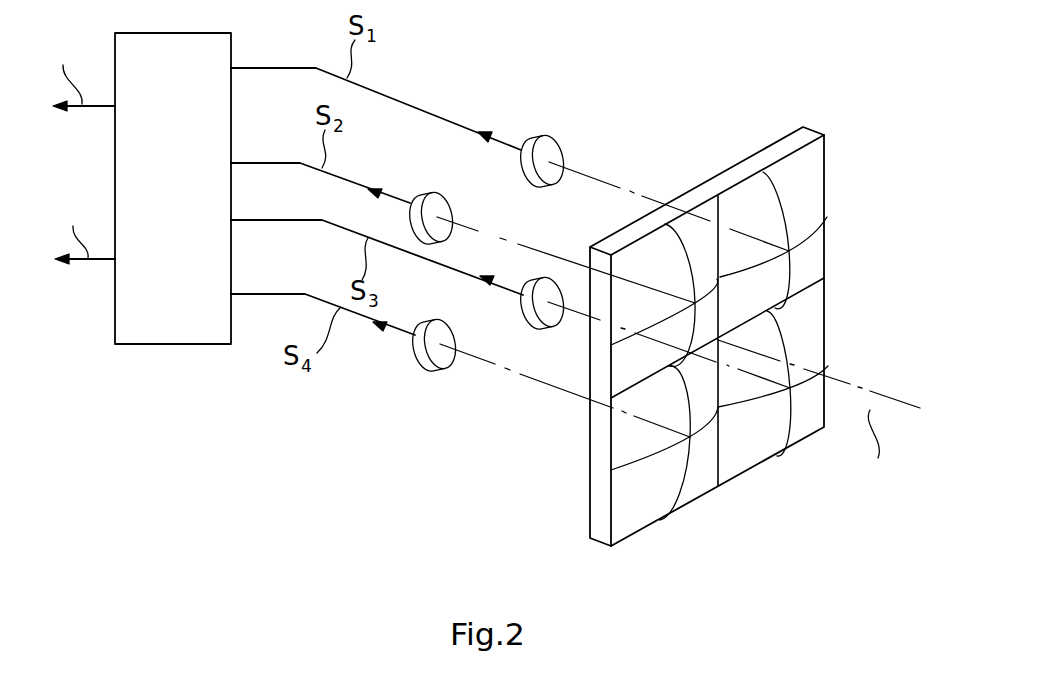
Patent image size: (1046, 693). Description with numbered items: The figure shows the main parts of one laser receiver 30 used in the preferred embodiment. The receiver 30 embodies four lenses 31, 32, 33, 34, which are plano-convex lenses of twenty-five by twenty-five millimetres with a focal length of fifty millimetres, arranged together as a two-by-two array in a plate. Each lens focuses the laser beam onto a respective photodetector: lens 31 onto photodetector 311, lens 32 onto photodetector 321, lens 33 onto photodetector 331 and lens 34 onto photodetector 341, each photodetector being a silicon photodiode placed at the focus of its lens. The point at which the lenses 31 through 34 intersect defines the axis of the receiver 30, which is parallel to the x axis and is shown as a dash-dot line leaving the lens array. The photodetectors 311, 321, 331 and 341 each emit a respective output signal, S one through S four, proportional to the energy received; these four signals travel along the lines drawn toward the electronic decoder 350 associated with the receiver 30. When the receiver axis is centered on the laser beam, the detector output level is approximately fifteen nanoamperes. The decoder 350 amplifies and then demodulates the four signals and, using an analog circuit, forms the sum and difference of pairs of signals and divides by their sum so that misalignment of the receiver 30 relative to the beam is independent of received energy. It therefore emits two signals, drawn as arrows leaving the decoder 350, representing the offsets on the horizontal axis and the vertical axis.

The electronic decoder 350 is at (155, 345).
The photodetector 311 is at (534, 135).
The photodetector 321 is at (439, 212).
The photodetector 331 is at (548, 330).
The photodetector 341 is at (440, 370).
The receiver 30 is at (632, 591).
The lens 31 is at (813, 180).
The lens 32 is at (693, 228).
The lens 33 is at (813, 327).
The lens 34 is at (625, 442).